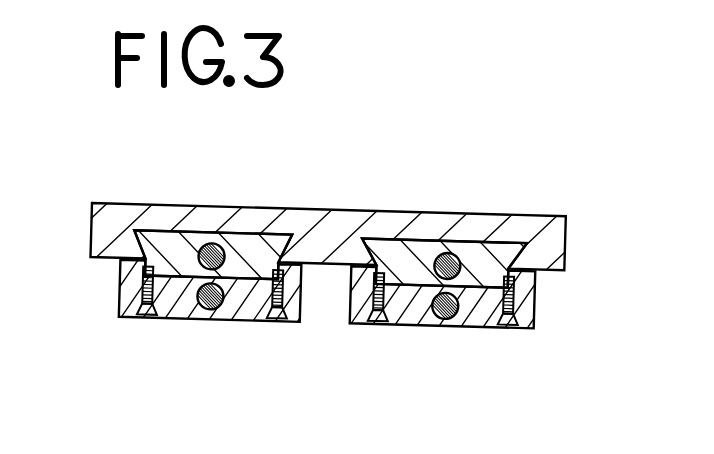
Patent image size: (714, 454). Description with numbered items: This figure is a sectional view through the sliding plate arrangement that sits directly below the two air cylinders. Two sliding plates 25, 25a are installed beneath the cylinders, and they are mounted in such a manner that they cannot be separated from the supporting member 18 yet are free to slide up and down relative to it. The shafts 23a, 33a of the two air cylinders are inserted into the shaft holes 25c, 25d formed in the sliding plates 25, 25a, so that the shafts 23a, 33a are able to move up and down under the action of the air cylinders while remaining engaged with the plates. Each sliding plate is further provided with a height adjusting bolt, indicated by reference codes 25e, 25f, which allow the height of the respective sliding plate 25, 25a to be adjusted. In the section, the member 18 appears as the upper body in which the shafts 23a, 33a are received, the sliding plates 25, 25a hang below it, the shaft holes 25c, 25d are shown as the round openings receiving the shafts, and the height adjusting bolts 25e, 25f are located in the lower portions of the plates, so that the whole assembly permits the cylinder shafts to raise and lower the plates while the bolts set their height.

The guide rail 18 is at (156, 212).
The shaft 23a is at (226, 233).
The shaft 33a is at (465, 243).
The sliding plate 25 is at (249, 292).
The sliding plate 25a is at (420, 288).
The shaft hole 25c is at (213, 245).
The shaft hole 25d is at (448, 254).
The height adjusting bolt 25e is at (207, 310).
The height adjusting bolt 25f is at (447, 320).